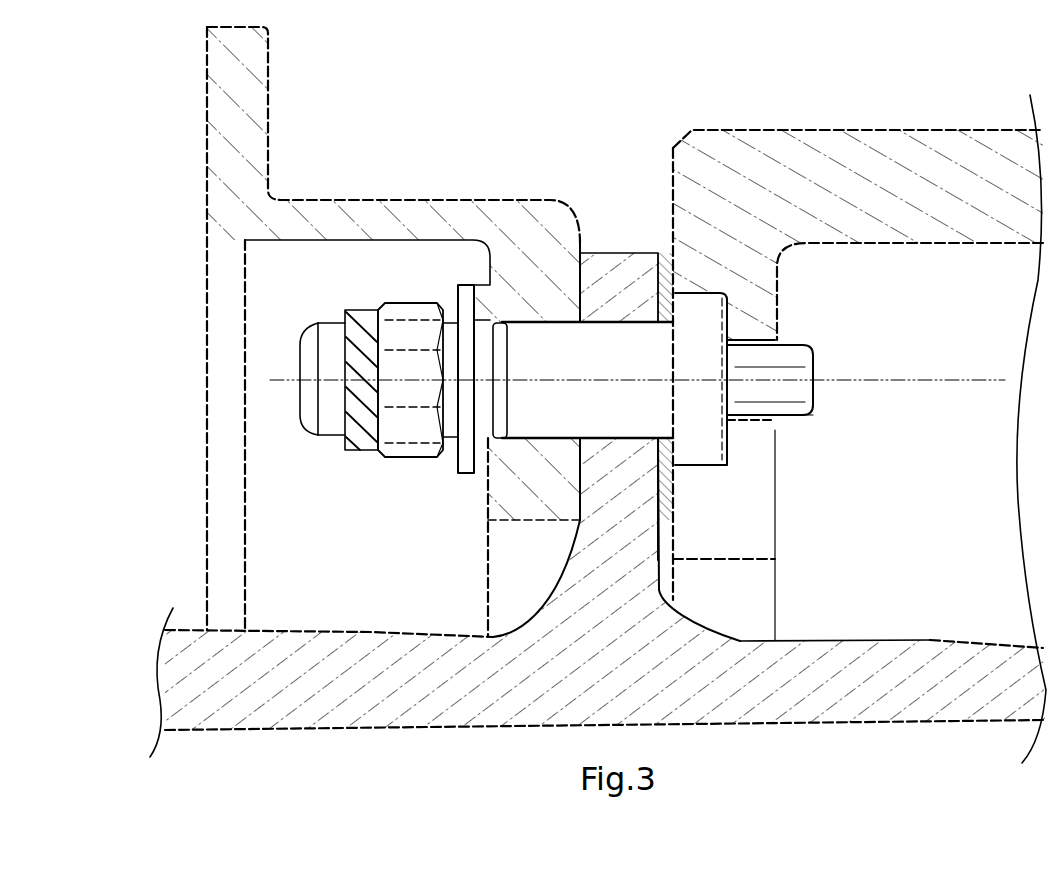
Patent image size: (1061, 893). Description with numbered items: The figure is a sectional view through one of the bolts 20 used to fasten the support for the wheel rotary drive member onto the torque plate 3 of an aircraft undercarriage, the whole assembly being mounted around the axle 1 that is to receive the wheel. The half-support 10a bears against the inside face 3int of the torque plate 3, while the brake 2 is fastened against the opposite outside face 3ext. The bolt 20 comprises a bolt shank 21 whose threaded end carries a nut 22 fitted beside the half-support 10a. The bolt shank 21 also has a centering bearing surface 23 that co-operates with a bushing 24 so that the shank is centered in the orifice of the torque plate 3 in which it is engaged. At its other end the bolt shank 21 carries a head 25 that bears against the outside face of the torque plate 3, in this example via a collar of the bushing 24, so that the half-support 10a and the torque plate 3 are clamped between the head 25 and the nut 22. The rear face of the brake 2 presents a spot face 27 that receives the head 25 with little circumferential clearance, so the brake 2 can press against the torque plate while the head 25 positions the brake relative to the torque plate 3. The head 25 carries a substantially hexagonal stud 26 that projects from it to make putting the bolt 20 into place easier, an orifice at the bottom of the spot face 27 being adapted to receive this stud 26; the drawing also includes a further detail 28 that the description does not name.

The axle 1 is at (865, 690).
The brake 2 is at (784, 168).
The torque plate 3 is at (645, 494).
The inside face of the torque plate 3int is at (580, 502).
The outside face of the torque plate 3ext is at (658, 527).
The half-support 10a is at (516, 215).
The bolt 20 is at (627, 361).
The bolt shank 21 is at (354, 446).
The nut 22 is at (410, 312).
The centering bearing surface 23 is at (618, 342).
The bushing 24 is at (658, 268).
The head 25 is at (710, 320).
The stud 26 is at (793, 355).
The spot face 27 is at (730, 442).
The shoulder 28 is at (766, 420).